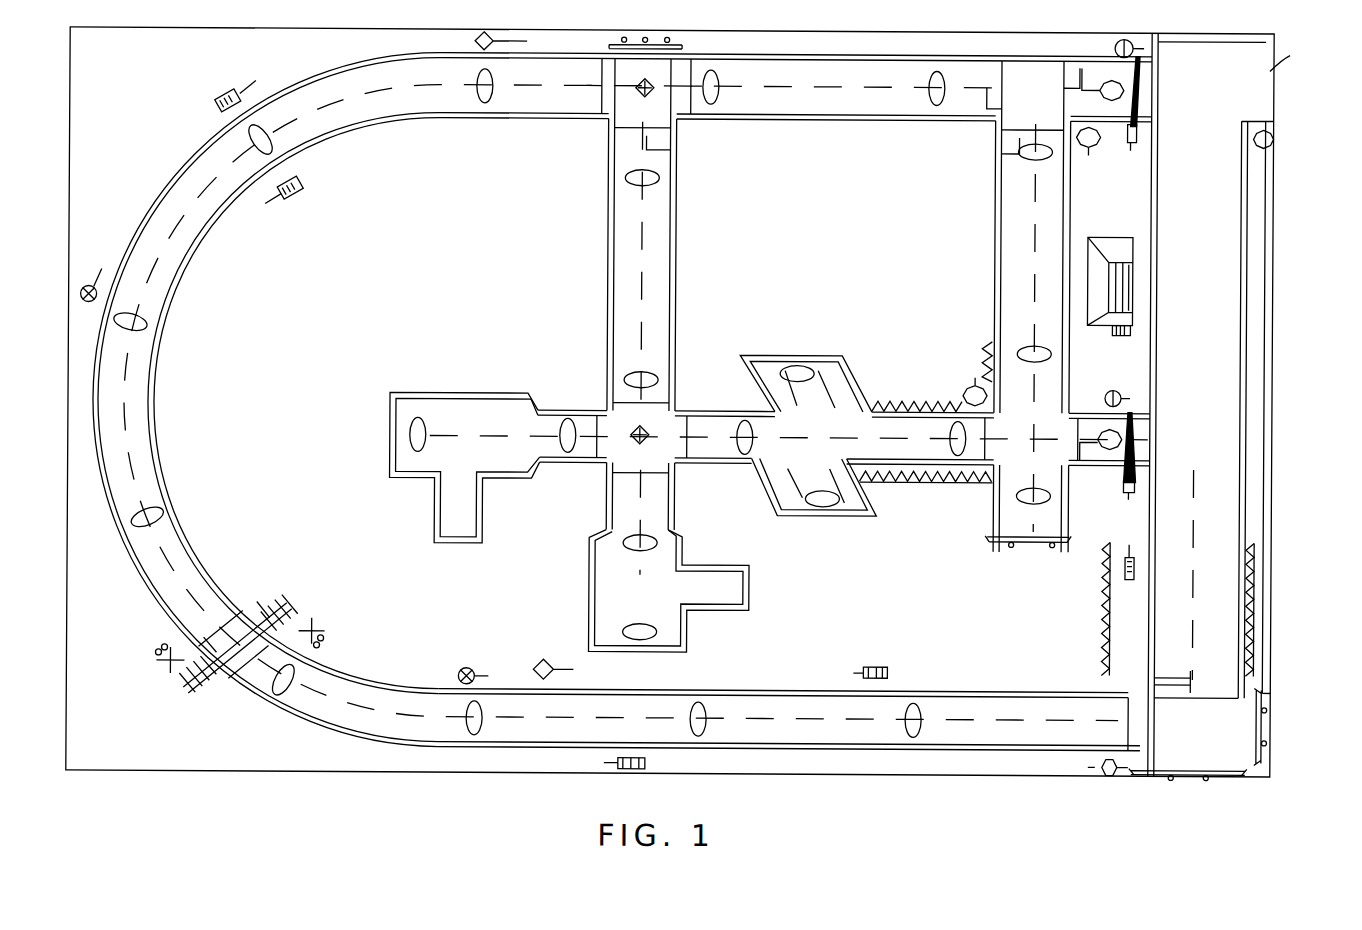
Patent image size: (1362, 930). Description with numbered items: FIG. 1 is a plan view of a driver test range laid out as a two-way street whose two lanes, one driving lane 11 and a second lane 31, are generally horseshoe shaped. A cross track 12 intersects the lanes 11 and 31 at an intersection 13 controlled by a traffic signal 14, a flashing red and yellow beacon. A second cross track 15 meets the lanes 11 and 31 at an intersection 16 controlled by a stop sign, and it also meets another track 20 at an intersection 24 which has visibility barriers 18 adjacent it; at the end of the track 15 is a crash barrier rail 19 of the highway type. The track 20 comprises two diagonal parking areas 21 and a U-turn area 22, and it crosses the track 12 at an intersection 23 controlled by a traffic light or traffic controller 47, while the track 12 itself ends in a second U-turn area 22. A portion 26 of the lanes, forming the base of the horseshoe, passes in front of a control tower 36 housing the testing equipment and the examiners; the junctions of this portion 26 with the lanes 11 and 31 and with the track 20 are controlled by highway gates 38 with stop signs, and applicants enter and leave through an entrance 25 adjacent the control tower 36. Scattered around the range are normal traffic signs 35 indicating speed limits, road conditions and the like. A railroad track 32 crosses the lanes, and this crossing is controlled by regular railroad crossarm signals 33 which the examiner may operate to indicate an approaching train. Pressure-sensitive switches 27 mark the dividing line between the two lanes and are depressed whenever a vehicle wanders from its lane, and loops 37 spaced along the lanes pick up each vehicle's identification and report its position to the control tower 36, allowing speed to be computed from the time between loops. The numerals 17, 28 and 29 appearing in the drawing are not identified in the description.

The driving lane 11 is at (360, 78).
The cross track 12 is at (628, 208).
The intersection 13 is at (660, 104).
The traffic signal 14 is at (640, 80).
The second cross track 15 is at (1022, 193).
The intersection 16 is at (1045, 70).
The stop sign 17 is at (962, 402).
The visibility barriers 18 is at (942, 364).
The crash barrier rail 19 is at (988, 537).
The track 20 is at (730, 425).
The diagonal parking areas 21 is at (775, 365).
The U-turn area 22 is at (392, 410).
The intersection 23 is at (618, 430).
The intersection 24 is at (1050, 425).
The entrance 25 is at (1252, 72).
The portion of the lanes 26 is at (1225, 292).
The pressure-sensitive switches 27 is at (1222, 491).
The exit area 28 is at (1196, 700).
The gate 29 is at (1266, 722).
The second lane 31 is at (1008, 706).
The railroad track 32 is at (272, 598).
The railroad crossarm signals 33 is at (313, 621).
The traffic signs 35 is at (218, 96).
The control tower 36 is at (1108, 238).
The loops 37 is at (266, 150).
The highway gate 38 is at (1128, 135).
The traffic controller 47 is at (650, 440).